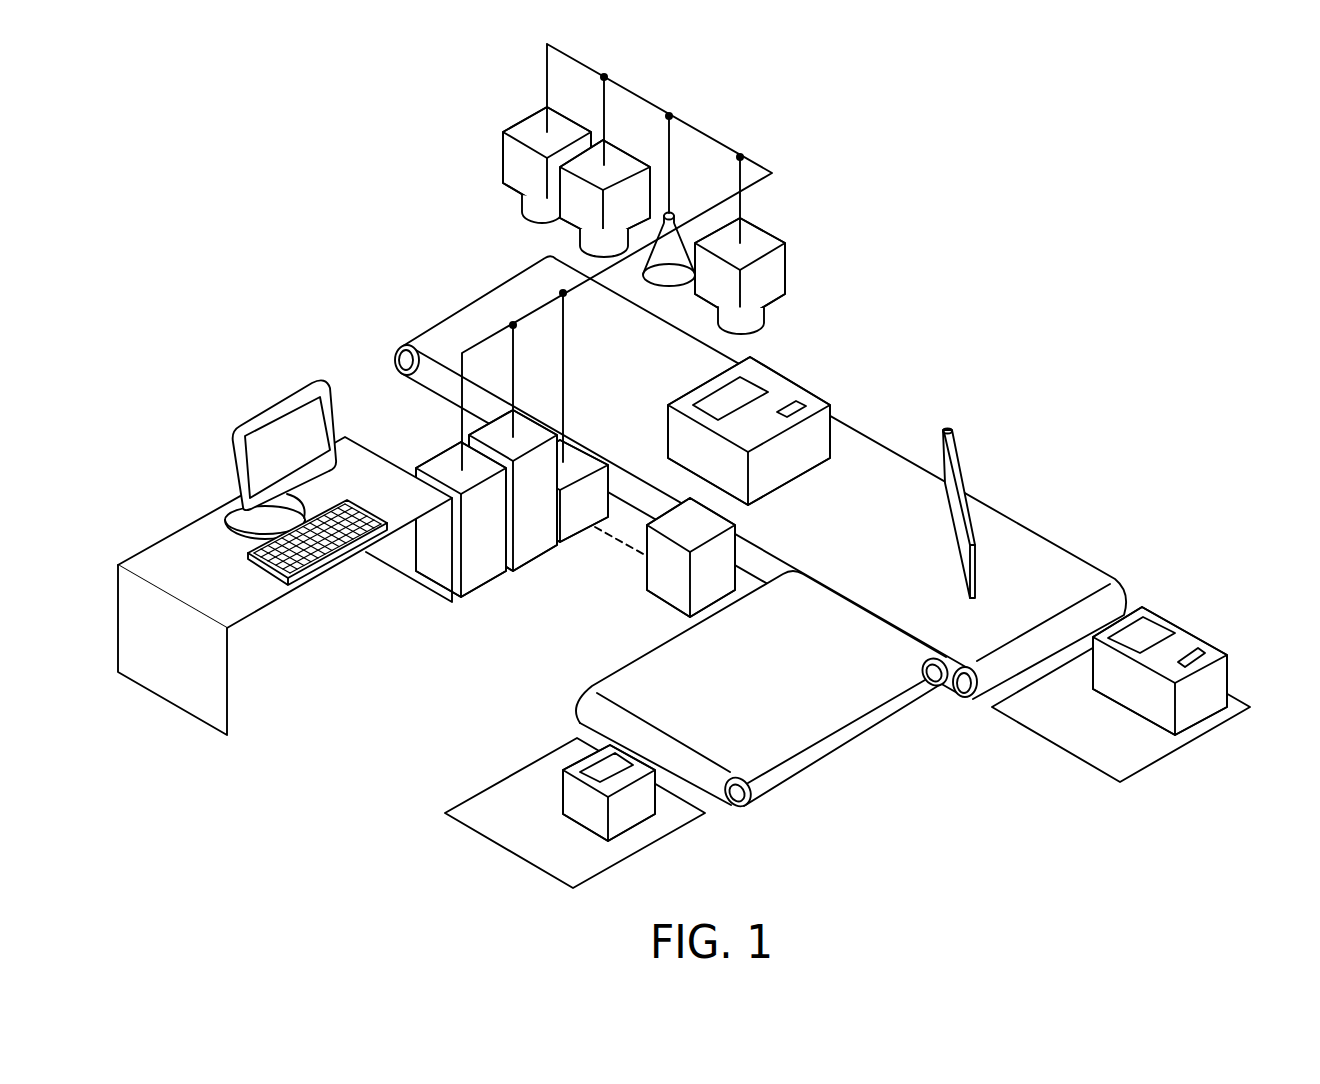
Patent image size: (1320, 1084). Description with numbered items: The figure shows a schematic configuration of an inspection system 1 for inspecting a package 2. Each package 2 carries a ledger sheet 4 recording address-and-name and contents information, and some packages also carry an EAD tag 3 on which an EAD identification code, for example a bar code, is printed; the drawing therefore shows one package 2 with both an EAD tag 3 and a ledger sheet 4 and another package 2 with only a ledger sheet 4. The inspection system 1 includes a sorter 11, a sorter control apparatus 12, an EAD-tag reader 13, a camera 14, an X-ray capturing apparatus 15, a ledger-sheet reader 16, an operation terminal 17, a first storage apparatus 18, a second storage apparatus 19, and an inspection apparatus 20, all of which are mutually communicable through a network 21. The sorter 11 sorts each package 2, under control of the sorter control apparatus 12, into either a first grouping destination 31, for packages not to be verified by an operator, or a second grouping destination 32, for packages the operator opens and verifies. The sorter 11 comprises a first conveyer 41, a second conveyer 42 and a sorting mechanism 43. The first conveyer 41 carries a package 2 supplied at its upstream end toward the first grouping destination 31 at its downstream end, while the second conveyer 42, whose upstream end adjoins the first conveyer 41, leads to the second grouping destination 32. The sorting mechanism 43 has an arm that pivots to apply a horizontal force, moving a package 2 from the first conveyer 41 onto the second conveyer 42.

The inspection system 1 is at (857, 274).
The package 2 is at (832, 405).
The EAD tag 3 is at (803, 400).
The ledger sheet 4 is at (767, 390).
The sorter 11 is at (916, 378).
The sorter control apparatus 12 is at (662, 593).
The EAD-tag reader 13 is at (557, 130).
The camera 14 is at (618, 165).
The X-ray capturing apparatus 15 is at (686, 230).
The ledger-sheet reader 16 is at (758, 243).
The operation terminal 17 is at (279, 398).
The first storage apparatus 18 is at (478, 437).
The second storage apparatus 19 is at (435, 463).
The inspection apparatus 20 is at (575, 528).
The network 21 is at (717, 140).
The first grouping destination 31 is at (1168, 748).
The second grouping destination 32 is at (480, 800).
The first conveyer 41 is at (484, 302).
The second conveyer 42 is at (610, 682).
The sorting mechanism 43 is at (962, 464).